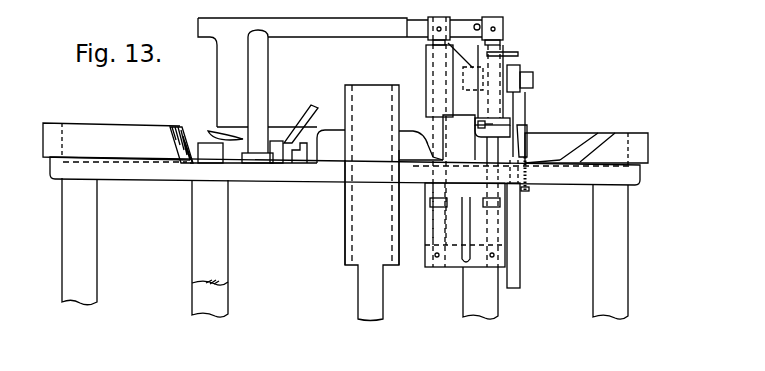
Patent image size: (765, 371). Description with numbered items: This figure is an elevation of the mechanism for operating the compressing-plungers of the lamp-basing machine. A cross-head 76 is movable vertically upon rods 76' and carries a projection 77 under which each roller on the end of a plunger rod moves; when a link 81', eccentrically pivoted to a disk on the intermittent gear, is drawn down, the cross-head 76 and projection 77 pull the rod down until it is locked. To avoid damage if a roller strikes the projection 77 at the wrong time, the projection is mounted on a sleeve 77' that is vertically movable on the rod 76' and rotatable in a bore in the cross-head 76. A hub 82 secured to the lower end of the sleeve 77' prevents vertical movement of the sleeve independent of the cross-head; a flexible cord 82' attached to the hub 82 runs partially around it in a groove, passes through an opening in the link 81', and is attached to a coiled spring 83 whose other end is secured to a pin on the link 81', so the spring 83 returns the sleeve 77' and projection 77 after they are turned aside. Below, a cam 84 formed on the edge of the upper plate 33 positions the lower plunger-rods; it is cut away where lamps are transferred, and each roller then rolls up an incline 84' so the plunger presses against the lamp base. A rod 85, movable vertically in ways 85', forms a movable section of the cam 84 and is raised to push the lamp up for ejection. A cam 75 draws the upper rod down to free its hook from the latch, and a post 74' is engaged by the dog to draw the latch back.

The upper plate 33 is at (248, 173).
The post 74' is at (248, 96).
The cam 75 is at (222, 131).
The cross-head 76 is at (427, 131).
The rods 76' is at (482, 147).
The projection 77 is at (524, 62).
The sleeve 77' is at (509, 117).
The link 81' is at (489, 235).
The hub 82 is at (518, 123).
The flexible cord 82' is at (459, 137).
The coiled spring 83 is at (533, 175).
The cam 84 is at (597, 133).
The incline 84' is at (570, 133).
The rod 85 is at (372, 203).
The ways 85' is at (371, 229).